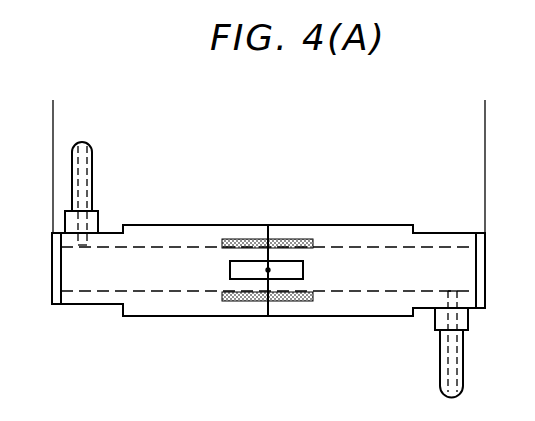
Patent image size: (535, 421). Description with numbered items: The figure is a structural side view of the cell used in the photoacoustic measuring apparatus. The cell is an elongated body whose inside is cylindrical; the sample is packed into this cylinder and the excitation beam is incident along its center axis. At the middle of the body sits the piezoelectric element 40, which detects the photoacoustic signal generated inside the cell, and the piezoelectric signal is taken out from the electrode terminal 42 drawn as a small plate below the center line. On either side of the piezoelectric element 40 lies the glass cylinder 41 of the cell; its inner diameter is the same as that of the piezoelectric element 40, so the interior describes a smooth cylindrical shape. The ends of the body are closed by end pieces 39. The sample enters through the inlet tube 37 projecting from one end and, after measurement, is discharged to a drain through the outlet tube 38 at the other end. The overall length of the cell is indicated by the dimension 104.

The inlet tube 37 is at (464, 358).
The outlet tube 38 is at (93, 155).
The end cap 39 is at (53, 305).
The piezoelectric element 40 is at (297, 225).
The glass cylinder 41 is at (178, 235).
The electrode terminal 42 is at (268, 270).
The overall length dimension 104 is at (485, 118).